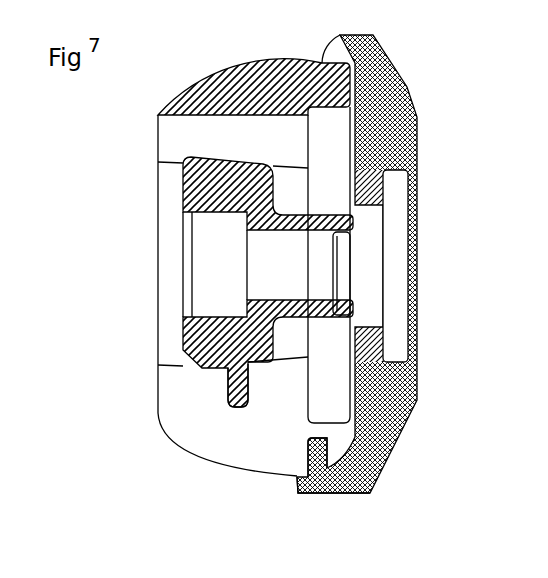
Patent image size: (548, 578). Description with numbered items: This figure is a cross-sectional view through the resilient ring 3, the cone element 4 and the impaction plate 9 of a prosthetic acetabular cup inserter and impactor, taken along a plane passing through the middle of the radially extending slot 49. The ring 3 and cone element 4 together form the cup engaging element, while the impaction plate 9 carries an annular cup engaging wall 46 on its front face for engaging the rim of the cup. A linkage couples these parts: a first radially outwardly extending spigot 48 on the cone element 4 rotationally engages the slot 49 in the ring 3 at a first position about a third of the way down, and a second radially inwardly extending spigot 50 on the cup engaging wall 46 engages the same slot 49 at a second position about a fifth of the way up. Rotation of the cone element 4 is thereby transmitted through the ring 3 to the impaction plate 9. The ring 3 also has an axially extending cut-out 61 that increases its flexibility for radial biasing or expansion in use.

The resilient ring 3 is at (213, 68).
The impaction plate 9 is at (410, 88).
The axially extending cut-out 61 is at (185, 131).
The cone element 4 is at (182, 186).
The first radially outwardly extending spigot 48 is at (226, 392).
The radially extending slot 49 is at (173, 390).
The second radially inwardly extending spigot 50 is at (305, 452).
The annular cup engaging wall 46 is at (295, 488).